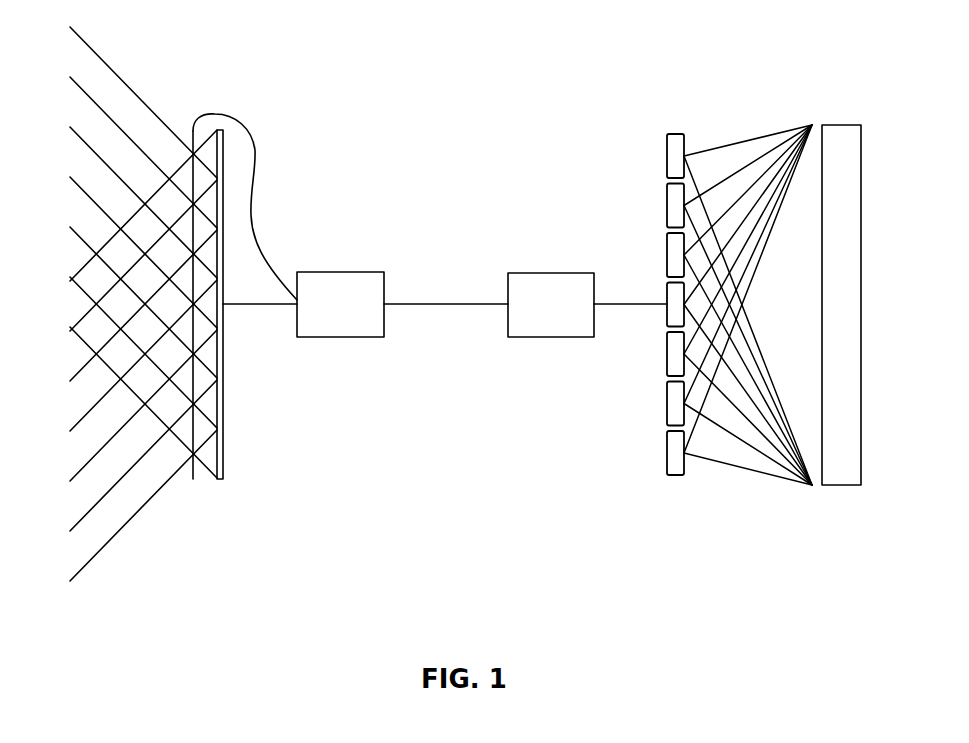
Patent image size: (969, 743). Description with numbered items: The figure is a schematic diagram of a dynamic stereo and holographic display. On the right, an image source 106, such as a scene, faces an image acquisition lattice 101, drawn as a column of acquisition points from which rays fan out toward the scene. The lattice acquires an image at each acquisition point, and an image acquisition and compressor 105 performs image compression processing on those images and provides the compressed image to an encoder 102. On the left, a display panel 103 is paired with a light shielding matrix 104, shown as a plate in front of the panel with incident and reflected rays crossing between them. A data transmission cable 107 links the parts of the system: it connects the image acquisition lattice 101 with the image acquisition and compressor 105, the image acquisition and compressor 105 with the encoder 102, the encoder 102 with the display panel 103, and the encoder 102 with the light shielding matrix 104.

The image acquisition lattice 101 is at (669, 477).
The encoder 102 is at (340, 304).
The display panel 103 is at (225, 480).
The light shielding matrix 104 is at (229, 343).
The image acquisition and compressor 105 is at (551, 305).
The image source 106 is at (828, 485).
The data transmission cable 107 is at (266, 301).